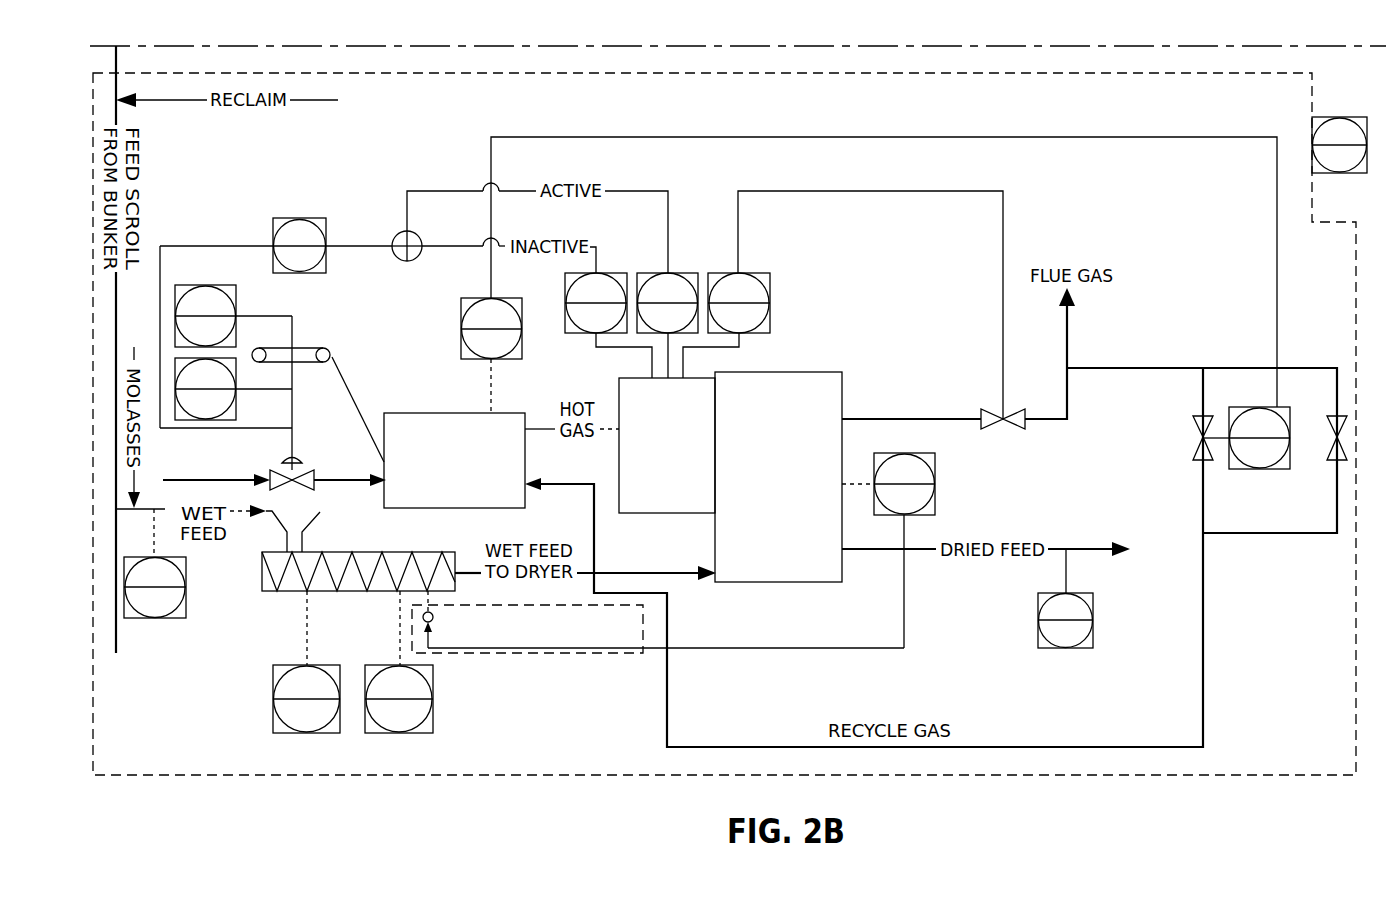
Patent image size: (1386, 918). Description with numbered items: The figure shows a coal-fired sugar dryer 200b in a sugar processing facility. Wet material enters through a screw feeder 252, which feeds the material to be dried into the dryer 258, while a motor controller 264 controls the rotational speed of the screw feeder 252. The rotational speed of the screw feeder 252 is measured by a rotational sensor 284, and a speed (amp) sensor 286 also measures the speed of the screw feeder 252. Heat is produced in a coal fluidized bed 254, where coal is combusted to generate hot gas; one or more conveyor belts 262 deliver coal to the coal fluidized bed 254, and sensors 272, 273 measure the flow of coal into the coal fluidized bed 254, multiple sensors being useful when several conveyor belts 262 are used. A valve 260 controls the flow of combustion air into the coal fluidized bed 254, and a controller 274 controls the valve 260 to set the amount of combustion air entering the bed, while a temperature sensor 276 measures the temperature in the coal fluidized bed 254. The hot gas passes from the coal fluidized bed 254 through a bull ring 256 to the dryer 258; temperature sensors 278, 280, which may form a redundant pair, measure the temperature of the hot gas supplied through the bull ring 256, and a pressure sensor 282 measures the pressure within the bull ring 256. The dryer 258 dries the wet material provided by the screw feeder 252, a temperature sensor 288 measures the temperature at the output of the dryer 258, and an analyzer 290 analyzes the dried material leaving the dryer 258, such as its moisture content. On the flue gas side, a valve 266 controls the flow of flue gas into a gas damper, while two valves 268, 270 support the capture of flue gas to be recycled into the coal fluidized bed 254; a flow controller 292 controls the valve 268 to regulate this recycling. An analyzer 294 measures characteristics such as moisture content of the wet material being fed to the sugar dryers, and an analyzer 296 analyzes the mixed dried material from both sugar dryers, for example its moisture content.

The sugar dryer 200b is at (1345, 756).
The screw feeder 252 is at (330, 552).
The coal fluidized bed 254 is at (515, 502).
The bull ring 256 is at (659, 509).
The dryer 258 is at (759, 576).
The valve 260 is at (316, 478).
The conveyor belt 262 is at (319, 348).
The motor controller 264 is at (498, 653).
The valve 266 is at (980, 410).
The valve 268 is at (1199, 463).
The valve 270 is at (1334, 416).
The sensor 272 is at (236, 297).
The sensor 273 is at (236, 406).
The controller 274 is at (310, 218).
The temperature sensor 276 is at (467, 298).
The temperature sensor 278 is at (580, 337).
The temperature sensor 280 is at (651, 273).
The pressure sensor 282 is at (746, 273).
The rotational sensor 284 is at (286, 665).
The speed (amp) sensor 286 is at (380, 665).
The temperature sensor 288 is at (935, 497).
The analyzer 290 is at (1038, 632).
The flow controller 292 is at (1249, 469).
The analyzer 294 is at (166, 618).
The analyzer 296 is at (1328, 117).